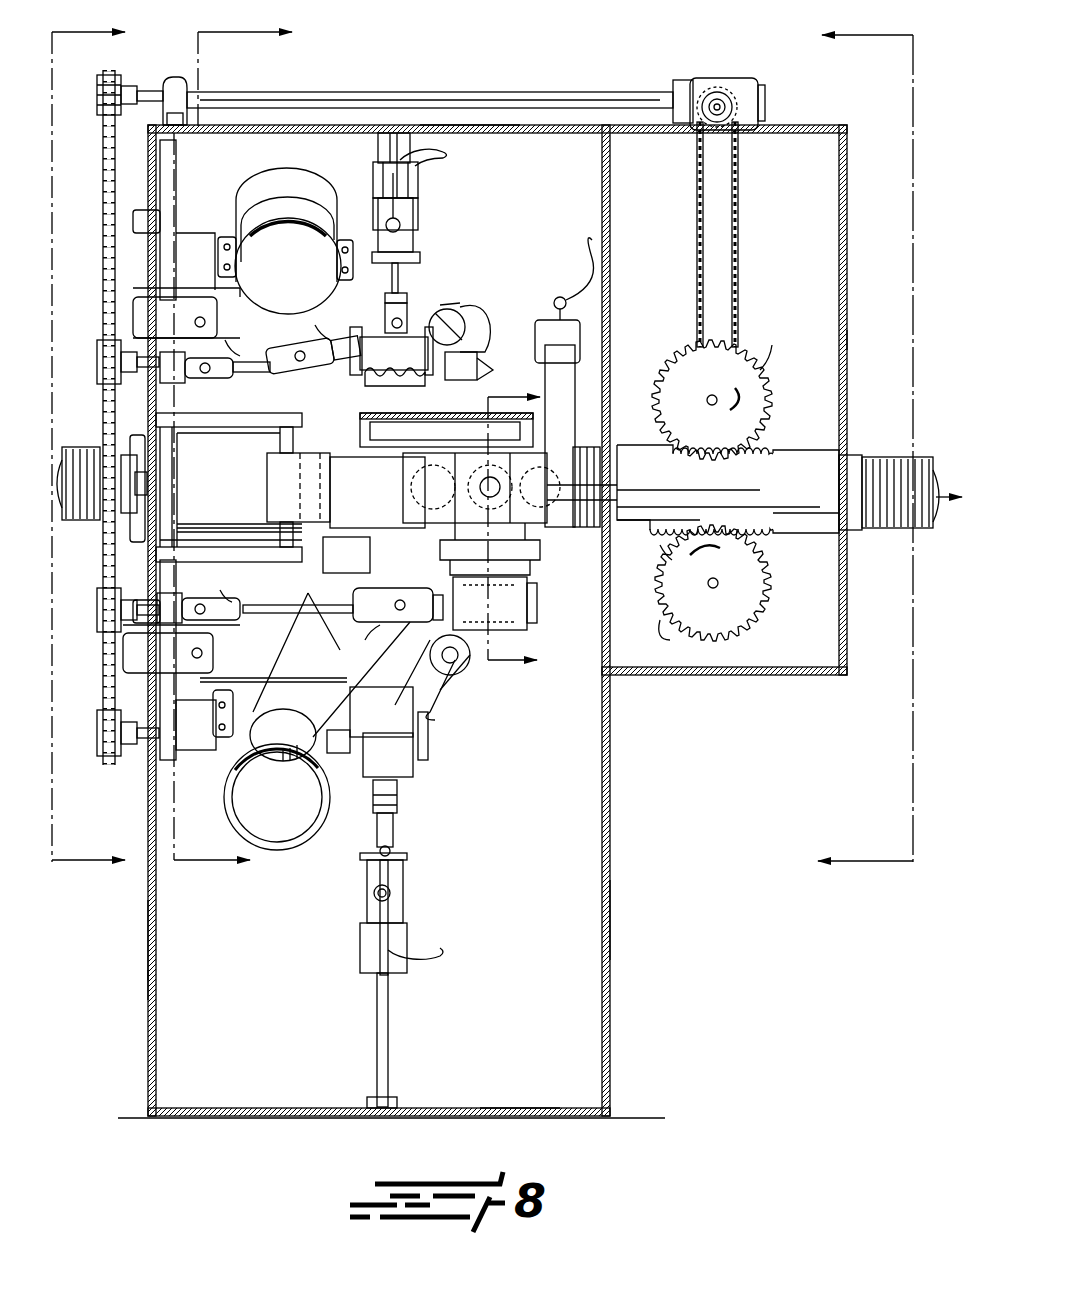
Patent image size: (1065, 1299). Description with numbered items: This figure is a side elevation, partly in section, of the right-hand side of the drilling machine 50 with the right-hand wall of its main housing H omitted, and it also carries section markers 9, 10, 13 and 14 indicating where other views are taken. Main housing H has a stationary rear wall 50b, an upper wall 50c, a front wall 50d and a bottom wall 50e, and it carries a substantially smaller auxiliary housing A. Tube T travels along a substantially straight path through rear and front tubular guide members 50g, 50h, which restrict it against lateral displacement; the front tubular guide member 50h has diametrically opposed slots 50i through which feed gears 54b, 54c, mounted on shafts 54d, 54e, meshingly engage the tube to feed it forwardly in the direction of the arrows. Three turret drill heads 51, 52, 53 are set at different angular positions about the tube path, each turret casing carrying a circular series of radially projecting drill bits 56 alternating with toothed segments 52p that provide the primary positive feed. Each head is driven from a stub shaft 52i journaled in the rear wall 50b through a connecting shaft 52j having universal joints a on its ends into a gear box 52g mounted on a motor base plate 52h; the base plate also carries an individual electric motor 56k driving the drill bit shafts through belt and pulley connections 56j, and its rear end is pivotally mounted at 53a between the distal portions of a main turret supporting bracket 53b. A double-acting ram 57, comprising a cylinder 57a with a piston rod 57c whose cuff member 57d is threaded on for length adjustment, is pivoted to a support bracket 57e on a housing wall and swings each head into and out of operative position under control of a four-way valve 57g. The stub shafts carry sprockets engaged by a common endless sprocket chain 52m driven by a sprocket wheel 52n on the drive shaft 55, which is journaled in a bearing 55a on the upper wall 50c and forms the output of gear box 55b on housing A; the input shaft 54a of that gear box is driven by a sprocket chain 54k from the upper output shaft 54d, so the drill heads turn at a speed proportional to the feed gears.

The drilling machine 50 is at (612, 812).
The rear wall 50b is at (157, 942).
The upper wall 50c is at (488, 127).
The front wall 50d is at (611, 912).
The bottom wall 50e is at (525, 1108).
The rear tubular guide member 50g is at (253, 507).
The front tubular guide member 50h is at (818, 455).
The slots 50i is at (720, 560).
The turret drill head 51 is at (480, 315).
The turret drill head 52 is at (600, 484).
The gear box 52g is at (527, 622).
The motor base plate 52h is at (345, 700).
The stub shaft 52i is at (160, 635).
The connecting shaft 52j is at (350, 612).
The endless sprocket chain 52m is at (103, 208).
The sprocket wheel 52n is at (97, 88).
The toothed segments 52p is at (437, 305).
The turret drill head 53 is at (478, 680).
The pivot 53a is at (238, 298).
The main turret supporting bracket 53b is at (168, 204).
The input shaft 54a is at (735, 110).
The feed gear 54b is at (755, 375).
The feed gear 54c is at (752, 618).
The upper output shaft 54d is at (700, 390).
The lower output shaft 54e is at (700, 625).
The endless sprocket chain 54k is at (738, 226).
The drive shaft 55 is at (430, 95).
The bearing 55a is at (175, 80).
The gear box 55b is at (680, 75).
The drill bits 56 is at (450, 305).
The belt and pulley connections 56j is at (400, 485).
The electric motor 56k is at (292, 190).
The double-acting fluid operated ram 57 is at (420, 190).
The cylinder 57a is at (390, 893).
The piston rod 57c is at (393, 832).
The cuff member 57d is at (397, 798).
The support bracket 57e is at (445, 156).
The four-way valve 57g is at (578, 300).
The auxiliary housing A is at (848, 338).
The main housing H is at (148, 975).
The tube T is at (890, 540).
The universal joints a is at (300, 474).
The section line 9 is at (72, 450).
The section line 10 is at (891, 451).
The section line 13 is at (258, 453).
The section line 14 is at (539, 529).